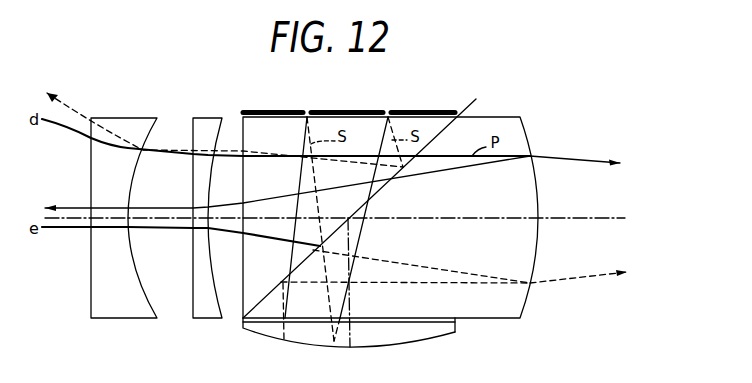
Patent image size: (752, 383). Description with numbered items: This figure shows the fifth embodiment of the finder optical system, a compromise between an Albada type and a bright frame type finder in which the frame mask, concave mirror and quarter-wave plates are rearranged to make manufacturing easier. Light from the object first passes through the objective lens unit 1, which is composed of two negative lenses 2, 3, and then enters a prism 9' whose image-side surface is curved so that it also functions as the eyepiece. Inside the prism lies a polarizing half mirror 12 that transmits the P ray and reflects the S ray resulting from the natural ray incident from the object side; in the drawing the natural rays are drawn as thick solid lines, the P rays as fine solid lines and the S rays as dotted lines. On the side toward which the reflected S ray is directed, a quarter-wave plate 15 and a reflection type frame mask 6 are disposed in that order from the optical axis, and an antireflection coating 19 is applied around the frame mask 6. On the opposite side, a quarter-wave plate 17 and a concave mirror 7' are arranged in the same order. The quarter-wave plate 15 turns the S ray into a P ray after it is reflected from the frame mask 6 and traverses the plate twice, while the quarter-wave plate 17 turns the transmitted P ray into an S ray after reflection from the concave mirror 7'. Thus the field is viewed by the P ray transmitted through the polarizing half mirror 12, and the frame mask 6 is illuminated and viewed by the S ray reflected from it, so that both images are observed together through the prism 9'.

The objective lens unit 1 is at (230, 108).
The negative lens 2 is at (120, 319).
The negative lens 3 is at (201, 319).
The reflection type frame mask 6 is at (388, 108).
The concave mirror 7' is at (353, 342).
The prism 9' is at (331, 198).
The polarizing half mirror 12 is at (450, 119).
The quarter-wave plate 15 is at (369, 200).
The quarter-wave plate 17 is at (458, 323).
The antireflection coating 19 is at (415, 111).